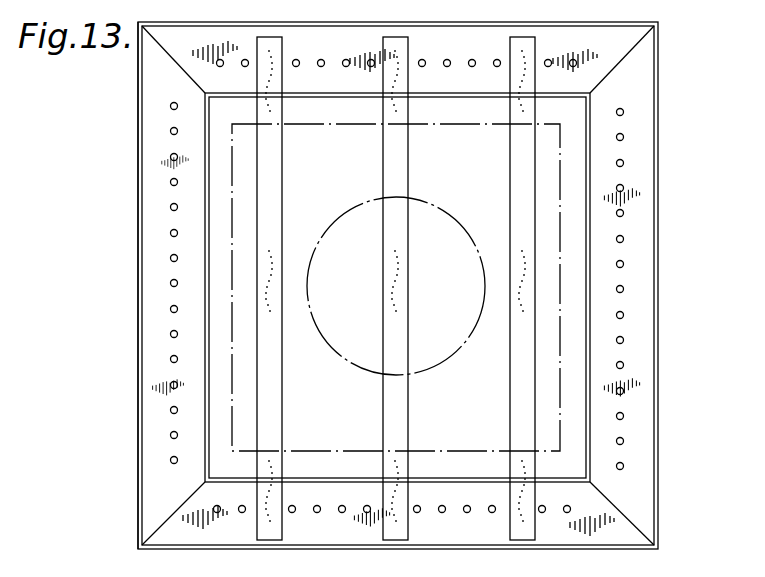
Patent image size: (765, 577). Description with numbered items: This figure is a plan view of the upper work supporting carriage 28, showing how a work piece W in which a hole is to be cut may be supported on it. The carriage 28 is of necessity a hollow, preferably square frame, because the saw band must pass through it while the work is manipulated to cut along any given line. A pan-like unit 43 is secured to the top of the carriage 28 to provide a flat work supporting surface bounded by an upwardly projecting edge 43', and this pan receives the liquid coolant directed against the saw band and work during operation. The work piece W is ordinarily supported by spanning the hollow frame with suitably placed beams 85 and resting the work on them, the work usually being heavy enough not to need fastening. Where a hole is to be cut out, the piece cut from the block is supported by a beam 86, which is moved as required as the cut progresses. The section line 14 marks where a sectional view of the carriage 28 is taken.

The frame plate 28 is at (152, 211).
The holes 43 is at (356, 286).
The frame side wall 43' is at (114, 285).
The workpiece W is at (555, 178).
The side clamping bars 85 is at (275, 409).
The center clamping bar 86 is at (397, 412).
The section line 14- 14 is at (102, 345).